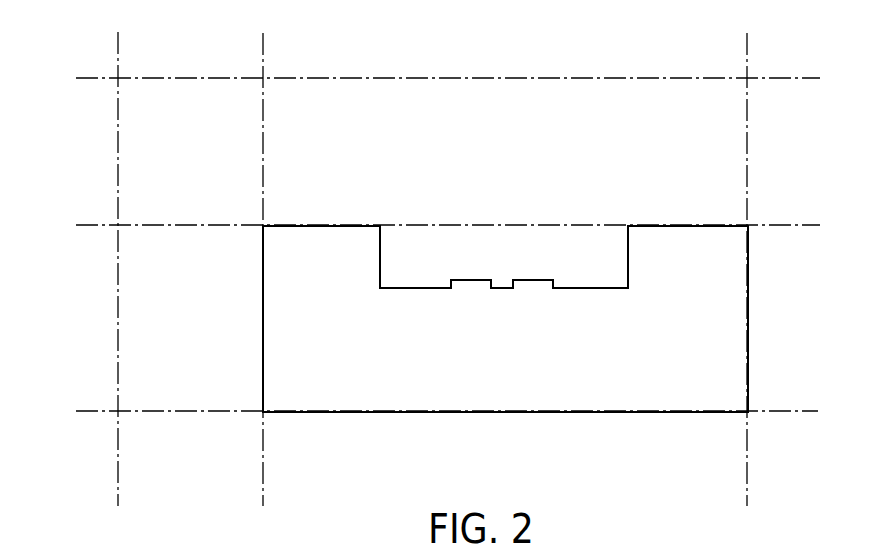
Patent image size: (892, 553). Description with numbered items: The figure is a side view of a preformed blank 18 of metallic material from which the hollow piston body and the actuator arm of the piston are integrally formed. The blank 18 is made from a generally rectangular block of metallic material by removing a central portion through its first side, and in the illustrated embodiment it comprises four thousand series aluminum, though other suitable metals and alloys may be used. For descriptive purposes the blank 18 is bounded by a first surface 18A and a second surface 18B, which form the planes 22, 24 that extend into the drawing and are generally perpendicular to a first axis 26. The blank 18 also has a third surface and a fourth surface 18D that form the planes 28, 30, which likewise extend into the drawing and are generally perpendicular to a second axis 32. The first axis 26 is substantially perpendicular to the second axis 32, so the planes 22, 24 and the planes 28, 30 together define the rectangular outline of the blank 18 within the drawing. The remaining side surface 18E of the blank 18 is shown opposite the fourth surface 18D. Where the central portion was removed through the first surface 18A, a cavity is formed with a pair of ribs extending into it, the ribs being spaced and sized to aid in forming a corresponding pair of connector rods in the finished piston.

The blank 18 is at (506, 319).
The first surface 18A is at (686, 226).
The second surface 18B is at (675, 412).
The fourth surface 18D is at (748, 288).
The left side surface of workpiece 18E is at (263, 297).
The plane 22 is at (92, 226).
The plane 24 is at (95, 412).
The first axis 26 is at (118, 125).
The plane 28 is at (263, 43).
The plane 30 is at (747, 44).
The second axis 32 is at (805, 80).